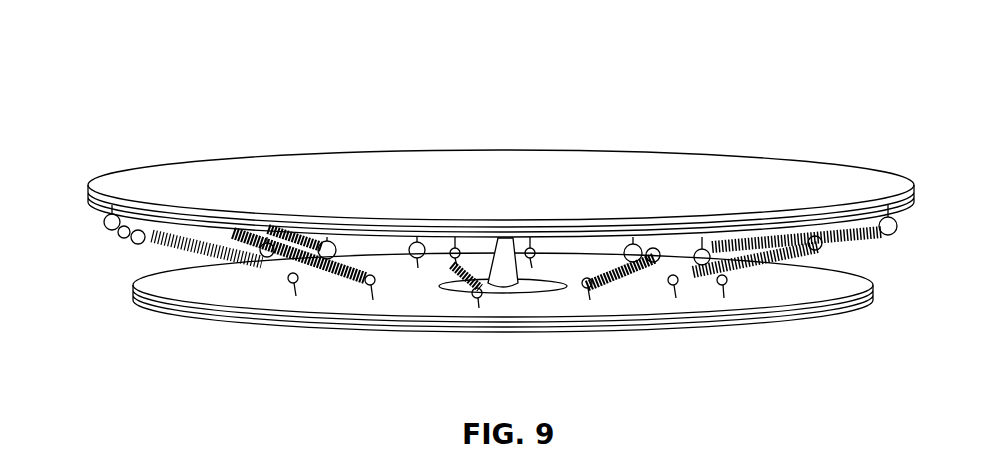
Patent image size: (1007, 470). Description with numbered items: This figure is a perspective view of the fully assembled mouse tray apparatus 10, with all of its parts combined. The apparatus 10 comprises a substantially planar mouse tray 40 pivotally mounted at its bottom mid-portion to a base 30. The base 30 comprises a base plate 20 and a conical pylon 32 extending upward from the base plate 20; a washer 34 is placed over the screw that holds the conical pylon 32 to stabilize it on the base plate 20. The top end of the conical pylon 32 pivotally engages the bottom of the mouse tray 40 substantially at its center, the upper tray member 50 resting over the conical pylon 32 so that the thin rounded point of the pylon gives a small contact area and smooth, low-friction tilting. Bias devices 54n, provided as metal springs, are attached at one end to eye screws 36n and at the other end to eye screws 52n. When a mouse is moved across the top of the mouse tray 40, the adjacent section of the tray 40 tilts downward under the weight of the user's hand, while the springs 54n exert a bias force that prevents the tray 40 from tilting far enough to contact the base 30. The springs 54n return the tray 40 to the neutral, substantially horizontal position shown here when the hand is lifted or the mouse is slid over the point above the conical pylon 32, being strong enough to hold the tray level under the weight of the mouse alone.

The mouse tray apparatus 10 is at (263, 98).
The base plate 20 is at (788, 278).
The base 30 is at (205, 322).
The conical pylon 32 is at (503, 267).
The washer 34 is at (533, 283).
The eye screws 36n is at (370, 288).
The mouse tray 40 is at (501, 185).
The upper tray member 50 is at (724, 152).
The eye screws 52n is at (903, 230).
The bias devices 54n is at (175, 258).